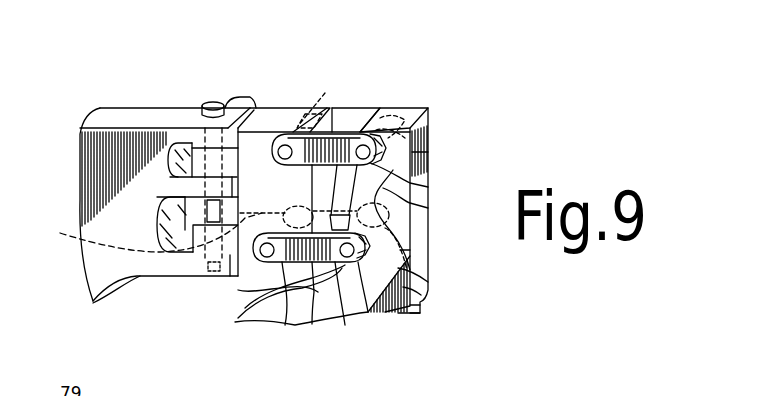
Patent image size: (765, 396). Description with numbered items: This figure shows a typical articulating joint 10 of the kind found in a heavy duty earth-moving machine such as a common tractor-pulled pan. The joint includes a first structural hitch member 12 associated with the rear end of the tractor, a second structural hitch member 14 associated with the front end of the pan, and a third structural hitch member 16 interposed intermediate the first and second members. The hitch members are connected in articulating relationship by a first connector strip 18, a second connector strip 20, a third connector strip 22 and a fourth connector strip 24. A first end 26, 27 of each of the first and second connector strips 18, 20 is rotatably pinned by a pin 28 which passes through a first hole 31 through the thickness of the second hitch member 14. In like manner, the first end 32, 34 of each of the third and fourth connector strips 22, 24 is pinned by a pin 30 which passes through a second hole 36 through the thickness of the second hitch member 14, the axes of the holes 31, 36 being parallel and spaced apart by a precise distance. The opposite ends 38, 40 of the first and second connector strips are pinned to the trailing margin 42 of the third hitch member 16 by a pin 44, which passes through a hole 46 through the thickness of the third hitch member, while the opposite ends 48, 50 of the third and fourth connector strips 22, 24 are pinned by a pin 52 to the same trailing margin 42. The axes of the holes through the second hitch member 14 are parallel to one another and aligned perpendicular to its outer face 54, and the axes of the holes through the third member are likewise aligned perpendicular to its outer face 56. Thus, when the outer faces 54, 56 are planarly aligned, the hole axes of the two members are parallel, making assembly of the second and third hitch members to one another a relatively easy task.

The articulating joint 10 is at (496, 80).
The first structural hitch member 12 is at (123, 108).
The second structural hitch member 14 is at (408, 108).
The third structural hitch member 16 is at (268, 108).
The first connector strip 18 is at (348, 132).
The second connector strip 20 is at (338, 110).
The third connector strip 22 is at (432, 222).
The fourth connector strip 24 is at (290, 322).
The first end of first connector strip 26 is at (428, 207).
The first end of second connector strip 27 is at (388, 104).
The pin 28 is at (430, 184).
The pin 30 is at (380, 306).
The first hole 31 is at (430, 152).
The first end of third connector strip 32 is at (428, 248).
The first end of fourth connector strip 34 is at (372, 322).
The second hole 36 is at (420, 304).
The opposite end of first connector strip 38 is at (326, 220).
The opposite end of second connector strip 40 is at (325, 85).
The trailing margin 42 is at (347, 306).
The pin 44 is at (279, 150).
The hole 46 is at (283, 108).
The opposite end of third connector strip 48 is at (246, 290).
The opposite end of fourth connector strip 50 is at (60, 234).
The pin 52 is at (234, 288).
The outer face of second hitch member 54 is at (440, 289).
The outer face of third hitch member 56 is at (207, 100).